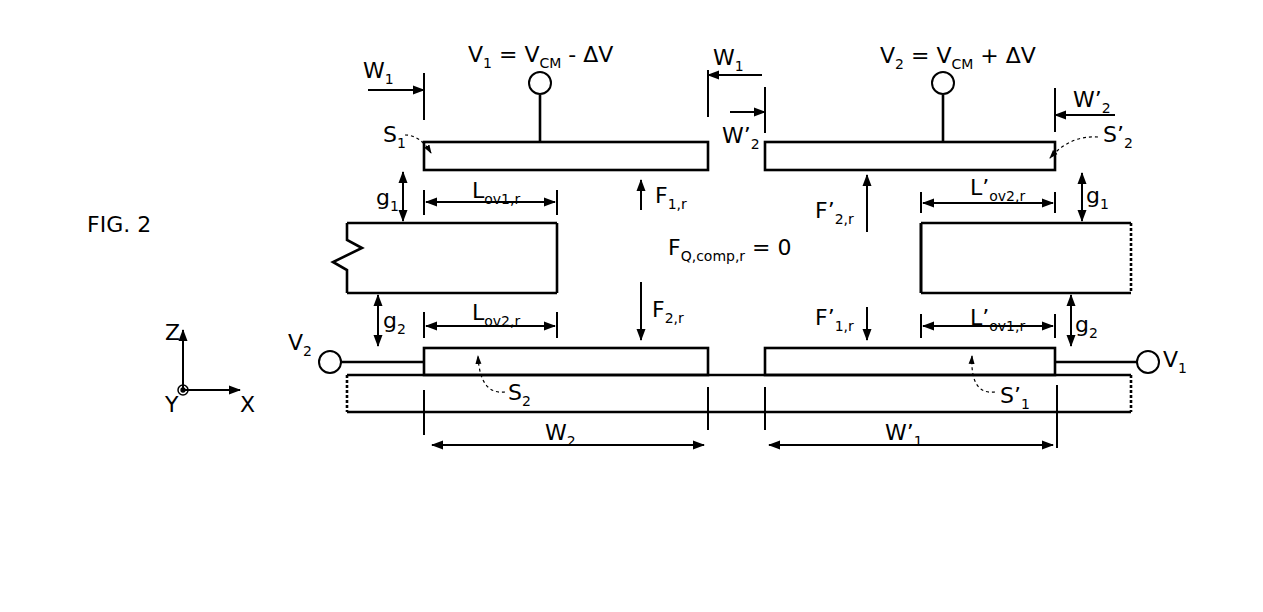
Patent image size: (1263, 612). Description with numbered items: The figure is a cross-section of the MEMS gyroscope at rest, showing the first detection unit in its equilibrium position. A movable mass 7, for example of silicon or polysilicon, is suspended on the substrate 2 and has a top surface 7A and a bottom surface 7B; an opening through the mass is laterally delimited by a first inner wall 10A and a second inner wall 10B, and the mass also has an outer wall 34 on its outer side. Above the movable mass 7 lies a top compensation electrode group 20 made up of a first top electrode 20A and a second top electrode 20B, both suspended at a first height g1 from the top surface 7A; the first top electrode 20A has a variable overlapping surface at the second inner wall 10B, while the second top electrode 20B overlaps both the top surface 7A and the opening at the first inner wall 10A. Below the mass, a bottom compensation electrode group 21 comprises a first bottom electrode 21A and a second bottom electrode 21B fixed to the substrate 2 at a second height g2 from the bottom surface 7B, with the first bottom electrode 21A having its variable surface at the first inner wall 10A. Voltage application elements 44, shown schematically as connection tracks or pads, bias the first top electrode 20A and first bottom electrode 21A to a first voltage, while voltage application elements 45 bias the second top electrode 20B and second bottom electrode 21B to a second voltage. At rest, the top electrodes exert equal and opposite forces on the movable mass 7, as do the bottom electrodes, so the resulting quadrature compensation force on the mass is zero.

The substrate 2 is at (1108, 403).
The movable mass 7 is at (747, 257).
The top surface 7A is at (356, 216).
The bottom surface 7B is at (357, 299).
The first inner wall 10A is at (910, 245).
The second inner wall 10B is at (565, 230).
The top compensation electrode group 20 is at (780, 72).
The first top electrode 20A is at (650, 160).
The second top electrode 20B is at (832, 158).
The bottom compensation electrode group 21 is at (726, 340).
The first bottom electrode 21A is at (798, 360).
The second bottom electrode 21B is at (588, 366).
The outer wall 34 is at (1136, 262).
The voltage application elements 44 is at (545, 120).
The voltage application elements 45 is at (947, 120).